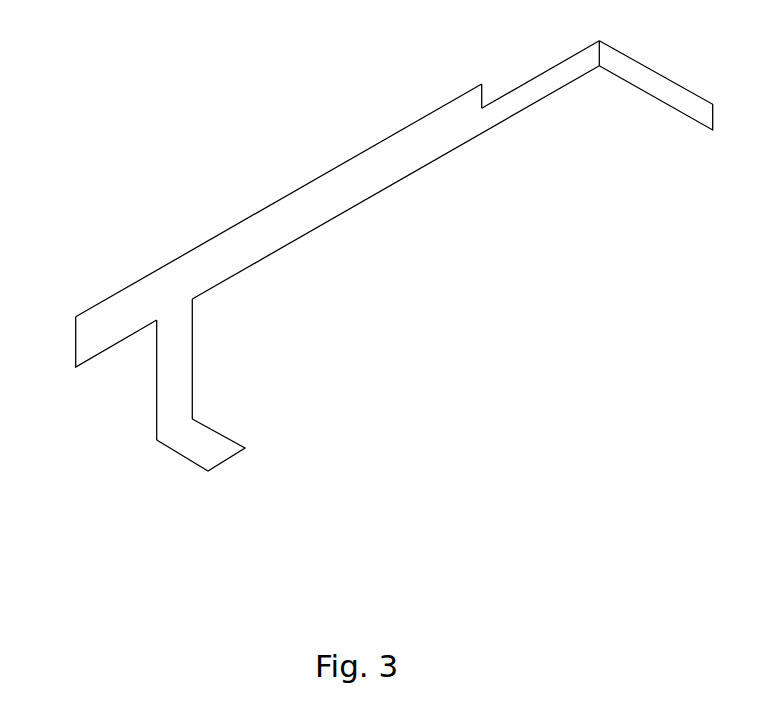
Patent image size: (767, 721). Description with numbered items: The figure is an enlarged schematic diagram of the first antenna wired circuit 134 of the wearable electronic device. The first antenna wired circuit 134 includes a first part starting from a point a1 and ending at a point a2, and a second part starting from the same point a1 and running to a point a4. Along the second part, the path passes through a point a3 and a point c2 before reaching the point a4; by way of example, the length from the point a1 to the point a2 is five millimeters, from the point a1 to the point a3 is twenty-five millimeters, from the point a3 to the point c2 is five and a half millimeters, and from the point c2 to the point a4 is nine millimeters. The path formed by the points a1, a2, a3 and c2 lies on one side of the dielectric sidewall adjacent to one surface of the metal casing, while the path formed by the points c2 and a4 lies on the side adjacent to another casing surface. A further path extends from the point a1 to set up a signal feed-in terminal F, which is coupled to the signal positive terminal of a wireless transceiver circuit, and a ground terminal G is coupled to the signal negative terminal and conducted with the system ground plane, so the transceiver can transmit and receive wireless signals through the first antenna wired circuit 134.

The first antenna wired circuit 134 is at (176, 70).
The point a1 is at (174, 354).
The point a2 is at (116, 342).
The point a3 is at (467, 108).
The point a4 is at (670, 87).
The point c2 is at (601, 39).
The signal feed-in terminal F is at (144, 444).
The ground terminal G is at (201, 451).